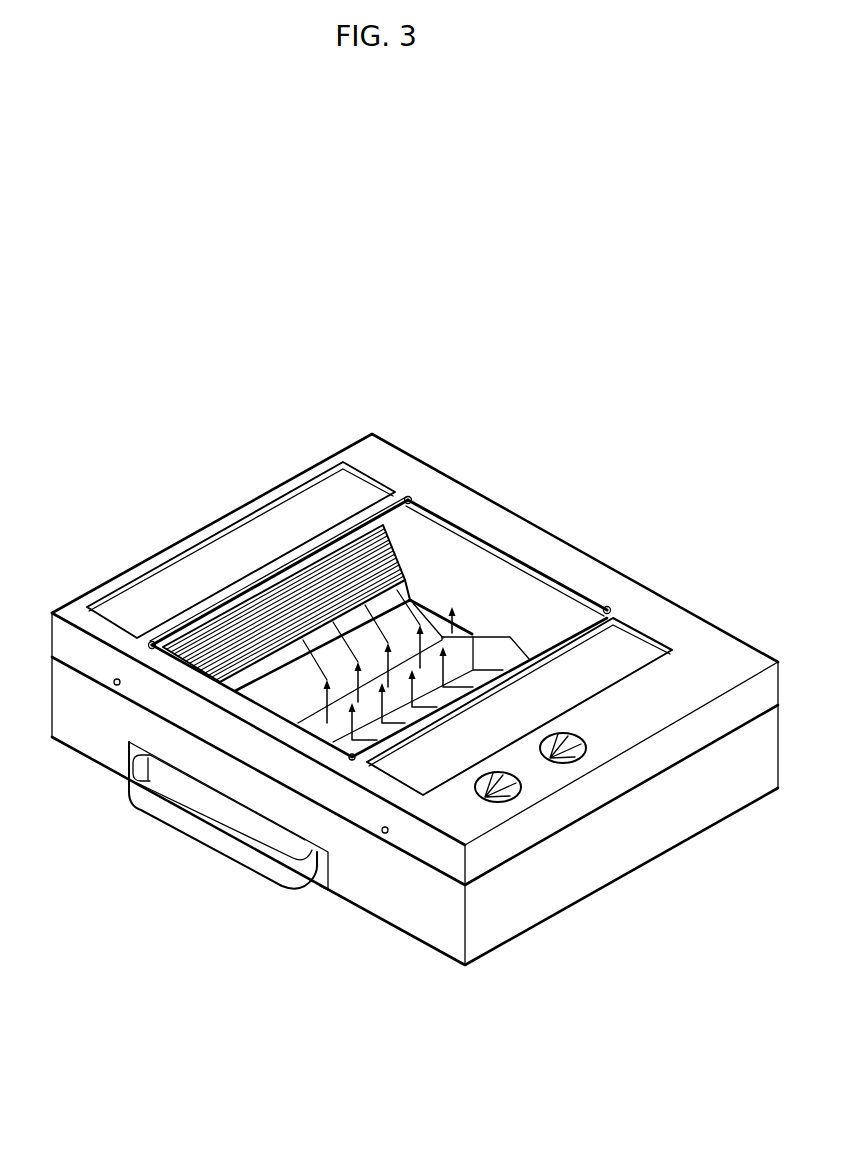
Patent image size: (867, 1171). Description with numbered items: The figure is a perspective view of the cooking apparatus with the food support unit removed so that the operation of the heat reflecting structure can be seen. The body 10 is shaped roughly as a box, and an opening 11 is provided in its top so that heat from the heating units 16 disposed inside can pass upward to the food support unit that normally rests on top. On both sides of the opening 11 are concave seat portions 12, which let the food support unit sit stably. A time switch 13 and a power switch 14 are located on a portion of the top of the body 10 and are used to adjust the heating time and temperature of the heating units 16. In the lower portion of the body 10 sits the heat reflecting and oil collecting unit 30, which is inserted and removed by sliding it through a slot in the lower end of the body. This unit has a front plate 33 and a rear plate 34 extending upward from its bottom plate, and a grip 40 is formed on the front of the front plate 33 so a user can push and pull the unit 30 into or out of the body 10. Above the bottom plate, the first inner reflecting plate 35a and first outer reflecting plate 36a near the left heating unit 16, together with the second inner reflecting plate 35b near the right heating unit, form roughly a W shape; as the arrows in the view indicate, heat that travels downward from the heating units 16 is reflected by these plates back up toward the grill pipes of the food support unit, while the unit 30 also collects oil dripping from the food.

The body 10 is at (722, 608).
The opening 11 is at (541, 578).
The concave seat portions 12 is at (303, 503).
The time switch 13 is at (512, 797).
The power switch 14 is at (582, 760).
The heating units 16 is at (212, 630).
The heat reflecting and oil collecting unit 30 is at (187, 842).
The front plate 33 is at (320, 880).
The rear plate 34 is at (438, 607).
The first inner reflecting plate 35a is at (465, 640).
The second inner reflecting plate 35b is at (507, 653).
The first outer reflecting plate 36a is at (262, 697).
The grip 40 is at (207, 833).